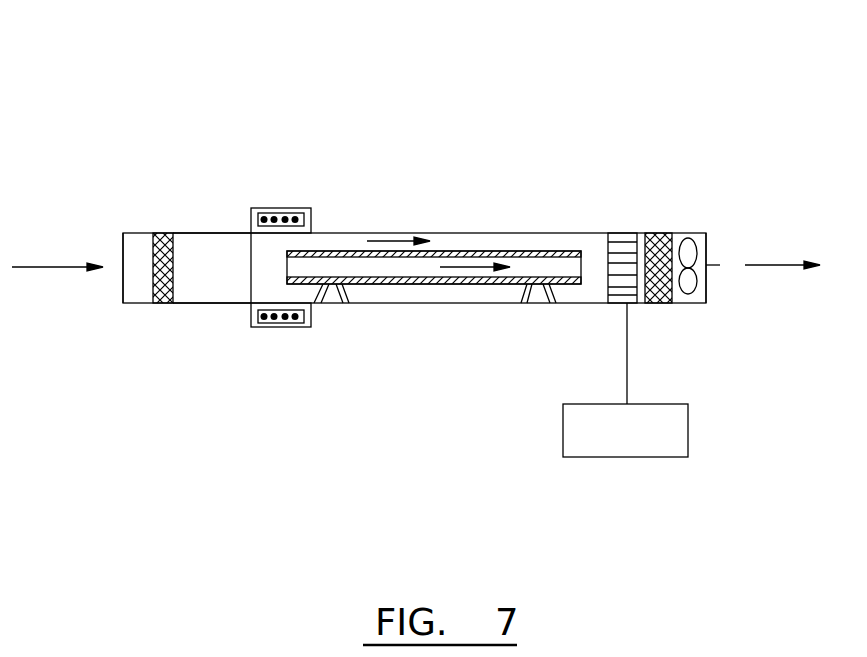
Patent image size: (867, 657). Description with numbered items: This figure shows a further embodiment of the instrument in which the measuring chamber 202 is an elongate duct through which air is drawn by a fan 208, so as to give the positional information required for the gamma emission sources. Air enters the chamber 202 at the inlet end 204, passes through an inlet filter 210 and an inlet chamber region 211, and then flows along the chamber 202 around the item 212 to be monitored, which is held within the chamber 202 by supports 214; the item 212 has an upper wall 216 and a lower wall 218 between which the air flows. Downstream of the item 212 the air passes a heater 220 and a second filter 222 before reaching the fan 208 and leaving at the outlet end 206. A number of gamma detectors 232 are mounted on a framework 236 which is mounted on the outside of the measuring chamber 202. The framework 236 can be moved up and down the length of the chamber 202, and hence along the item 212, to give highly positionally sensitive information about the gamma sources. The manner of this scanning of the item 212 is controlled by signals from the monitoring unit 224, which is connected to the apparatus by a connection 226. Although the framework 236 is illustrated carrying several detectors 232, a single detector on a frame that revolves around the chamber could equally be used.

The measuring chamber 202 is at (452, 180).
The air inlet 204 is at (109, 226).
The air outlet 206 is at (721, 225).
The fan 208 is at (688, 278).
The inlet filter 210 is at (165, 303).
The inlet chamber 211 is at (187, 200).
The item to be monitored 212 is at (517, 234).
The supports 214 is at (345, 303).
The inner tube wall 216 is at (323, 252).
The inner tube bottom wall 218 is at (386, 284).
The heater 220 is at (625, 202).
The outlet filter 222 is at (662, 230).
The monitoring unit 224 is at (626, 441).
The connecting wire 226 is at (627, 352).
The gamma detectors 232 is at (287, 217).
The framework 236 is at (257, 327).